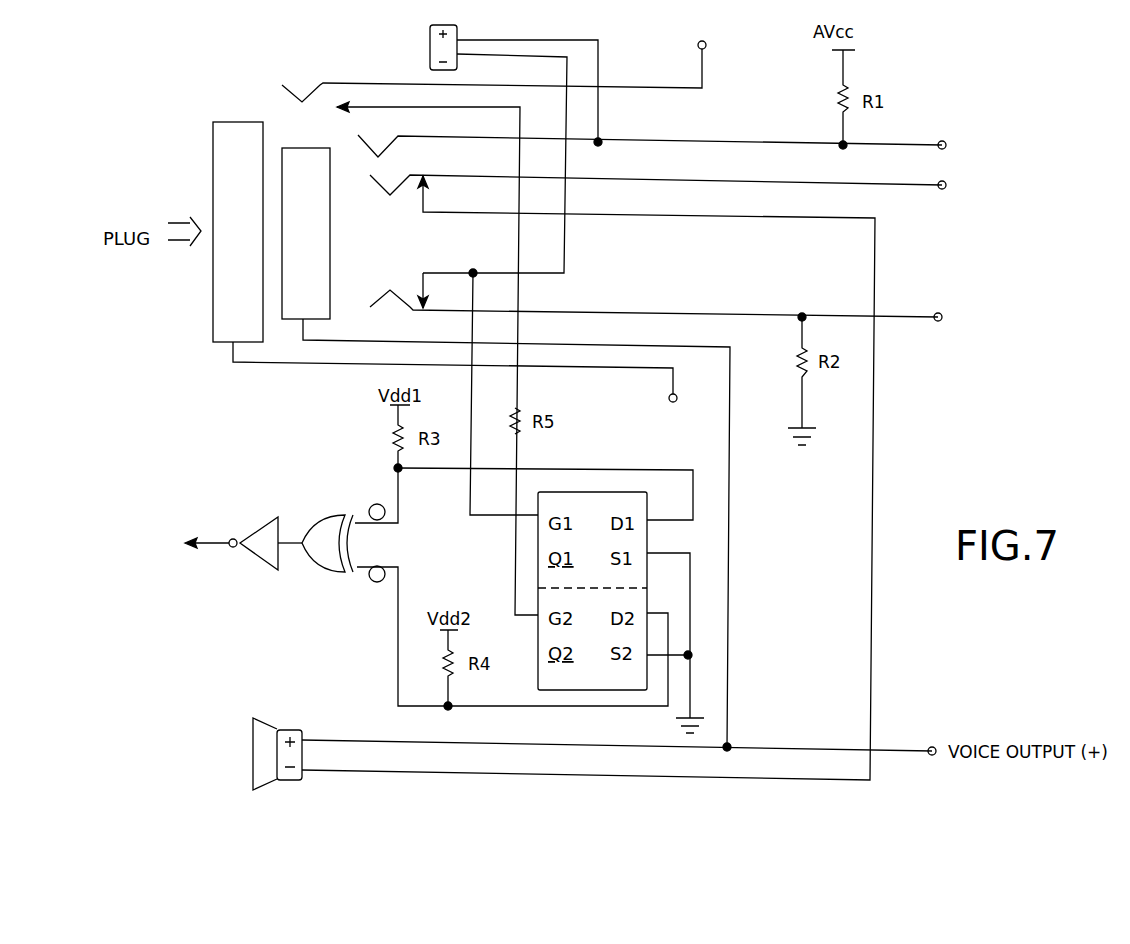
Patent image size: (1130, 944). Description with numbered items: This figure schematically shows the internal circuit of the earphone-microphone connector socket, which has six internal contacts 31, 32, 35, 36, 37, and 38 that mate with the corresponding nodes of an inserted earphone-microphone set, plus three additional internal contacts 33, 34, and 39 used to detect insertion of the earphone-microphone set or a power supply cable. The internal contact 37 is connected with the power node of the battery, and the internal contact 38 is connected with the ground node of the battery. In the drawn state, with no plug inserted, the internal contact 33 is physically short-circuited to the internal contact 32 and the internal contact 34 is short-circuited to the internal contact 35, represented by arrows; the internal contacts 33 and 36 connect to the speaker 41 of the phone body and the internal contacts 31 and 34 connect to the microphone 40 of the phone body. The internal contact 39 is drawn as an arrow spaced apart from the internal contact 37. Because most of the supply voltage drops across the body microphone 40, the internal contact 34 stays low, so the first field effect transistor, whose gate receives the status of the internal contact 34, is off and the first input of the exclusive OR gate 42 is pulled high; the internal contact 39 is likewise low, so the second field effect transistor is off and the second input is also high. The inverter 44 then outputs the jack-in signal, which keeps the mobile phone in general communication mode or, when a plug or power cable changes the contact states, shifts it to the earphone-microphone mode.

The internal contact 31 is at (377, 149).
The internal contact 32 is at (368, 178).
The internal contact 33 is at (420, 211).
The internal contact 34 is at (418, 271).
The internal contact 35 is at (374, 306).
The internal contact 36 is at (289, 320).
The internal contact 37 is at (297, 80).
The internal contact 38 is at (220, 343).
The internal contact 39 is at (338, 106).
The microphone 40 is at (457, 27).
The speaker 41 is at (285, 729).
The exclusive OR gate 42 is at (318, 572).
The inverter 44 is at (260, 530).